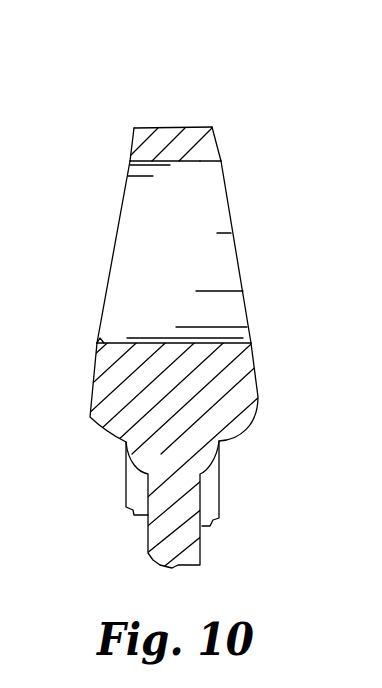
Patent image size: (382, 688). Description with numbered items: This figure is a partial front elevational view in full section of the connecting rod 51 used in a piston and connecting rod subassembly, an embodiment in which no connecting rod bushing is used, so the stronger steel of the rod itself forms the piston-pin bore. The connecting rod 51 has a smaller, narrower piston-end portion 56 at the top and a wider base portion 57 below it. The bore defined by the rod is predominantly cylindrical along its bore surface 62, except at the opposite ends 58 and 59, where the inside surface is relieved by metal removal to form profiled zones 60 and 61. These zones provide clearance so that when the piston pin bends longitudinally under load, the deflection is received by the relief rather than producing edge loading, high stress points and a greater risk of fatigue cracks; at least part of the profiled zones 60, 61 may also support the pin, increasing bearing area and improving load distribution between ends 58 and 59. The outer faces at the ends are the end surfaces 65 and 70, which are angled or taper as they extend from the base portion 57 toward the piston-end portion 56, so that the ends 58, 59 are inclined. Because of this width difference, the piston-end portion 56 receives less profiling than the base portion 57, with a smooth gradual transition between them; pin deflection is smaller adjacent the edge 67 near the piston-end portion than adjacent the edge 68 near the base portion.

The connecting rod 51 is at (262, 97).
The piston-end portion 56 is at (220, 135).
The base portion 57 is at (236, 370).
The end 58 is at (114, 247).
The end 59 is at (230, 217).
The profiled zone 60 is at (100, 341).
The profiled zone 61 is at (248, 332).
The bore surface 62 is at (188, 164).
The end surface 65 is at (220, 150).
The edge 67 is at (218, 162).
The edge 68 is at (249, 343).
The end surface 70 is at (133, 150).